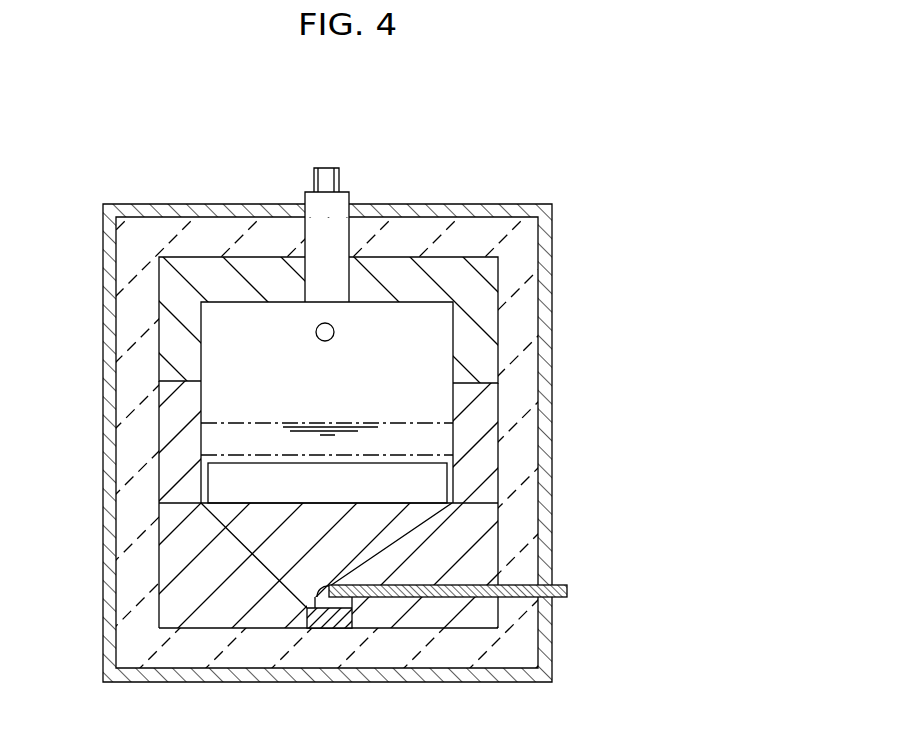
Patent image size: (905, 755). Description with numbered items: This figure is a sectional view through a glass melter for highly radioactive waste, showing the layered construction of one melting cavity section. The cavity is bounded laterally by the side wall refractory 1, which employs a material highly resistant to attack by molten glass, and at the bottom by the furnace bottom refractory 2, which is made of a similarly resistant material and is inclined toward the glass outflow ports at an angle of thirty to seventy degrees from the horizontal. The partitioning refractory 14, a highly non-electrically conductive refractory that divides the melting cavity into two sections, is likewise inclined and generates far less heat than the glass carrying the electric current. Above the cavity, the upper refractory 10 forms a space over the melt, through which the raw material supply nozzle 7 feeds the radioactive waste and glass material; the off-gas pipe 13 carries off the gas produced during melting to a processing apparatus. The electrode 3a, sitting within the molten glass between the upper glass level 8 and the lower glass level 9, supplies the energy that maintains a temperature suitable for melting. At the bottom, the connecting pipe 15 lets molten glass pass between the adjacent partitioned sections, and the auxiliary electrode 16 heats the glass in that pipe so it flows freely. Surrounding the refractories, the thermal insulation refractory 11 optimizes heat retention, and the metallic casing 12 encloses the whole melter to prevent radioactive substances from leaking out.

The side wall refractory 1 is at (472, 493).
The furnace bottom refractory 2 is at (460, 552).
The electrode 3a is at (435, 482).
The raw material supply nozzle 7 is at (341, 198).
The upper glass level 8 is at (397, 425).
The lower glass level 9 is at (406, 457).
The upper refractory 10 is at (182, 310).
The thermal insulation refractory 11 is at (130, 255).
The casing 12 is at (152, 204).
The off-gas pipe 13 is at (316, 333).
The partitioning refractory 14 is at (253, 533).
The connecting pipe 15 is at (323, 602).
The auxiliary electrode 16 is at (567, 597).